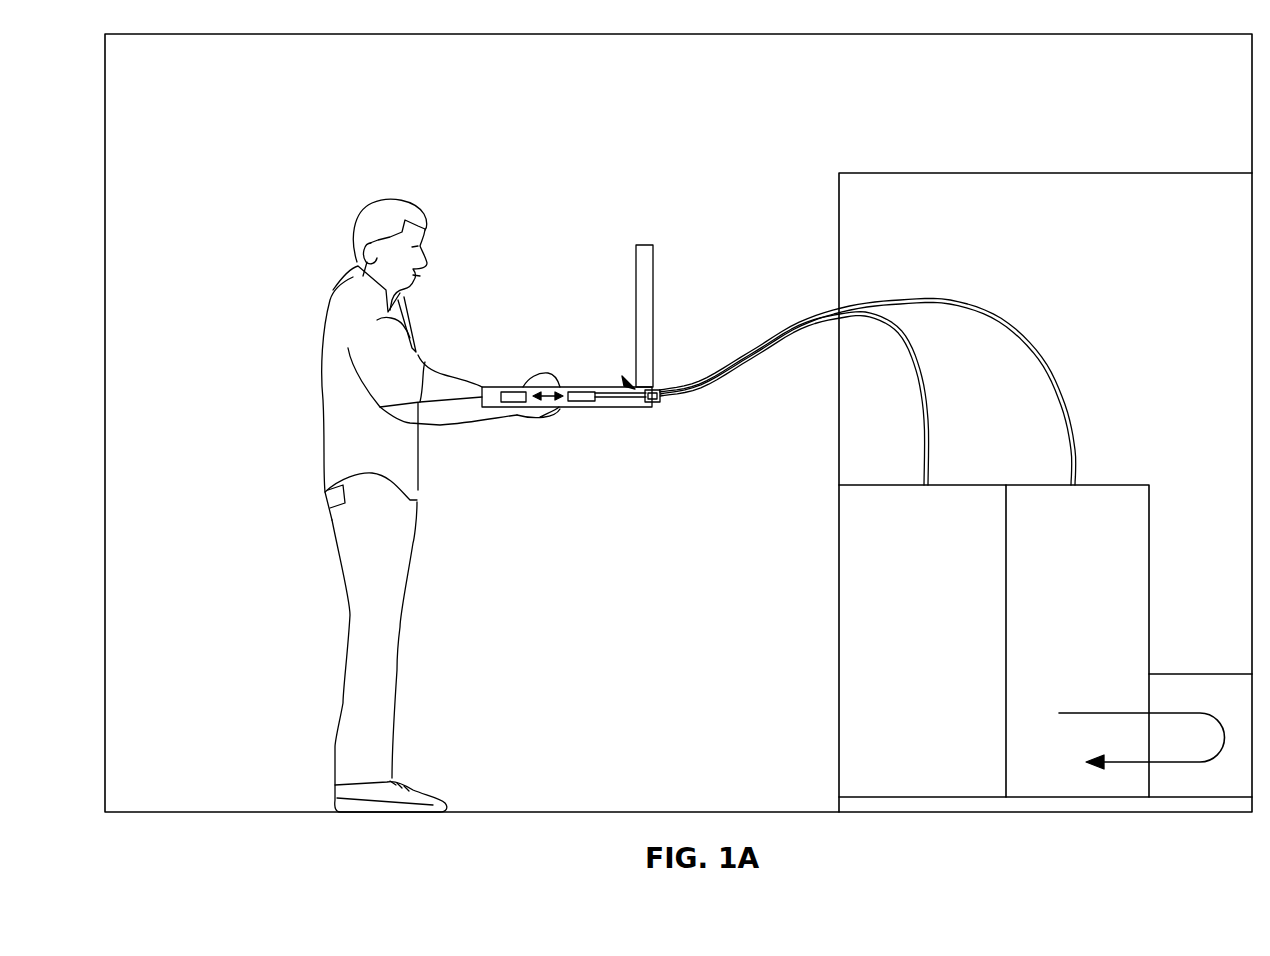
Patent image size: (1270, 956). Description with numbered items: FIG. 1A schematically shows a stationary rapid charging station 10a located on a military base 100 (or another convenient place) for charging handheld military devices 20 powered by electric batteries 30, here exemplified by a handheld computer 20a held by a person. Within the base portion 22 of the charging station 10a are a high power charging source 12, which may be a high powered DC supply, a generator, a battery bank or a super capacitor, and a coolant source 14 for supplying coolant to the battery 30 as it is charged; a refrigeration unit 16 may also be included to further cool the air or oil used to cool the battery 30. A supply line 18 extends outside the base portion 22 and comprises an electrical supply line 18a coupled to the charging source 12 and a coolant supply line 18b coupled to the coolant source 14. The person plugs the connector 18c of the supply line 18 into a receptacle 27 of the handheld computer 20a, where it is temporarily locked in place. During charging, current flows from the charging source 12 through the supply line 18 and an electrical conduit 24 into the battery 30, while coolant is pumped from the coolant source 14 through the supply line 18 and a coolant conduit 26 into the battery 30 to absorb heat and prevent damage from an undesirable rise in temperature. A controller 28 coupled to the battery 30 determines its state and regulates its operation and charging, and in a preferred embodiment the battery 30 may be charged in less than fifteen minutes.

The military base 100 is at (175, 34).
The rapid charging station 10a is at (1040, 461).
The high power charging source 12 is at (938, 653).
The coolant source 14 is at (1093, 653).
The refrigeration unit 16 is at (1229, 704).
The supply line 18 is at (868, 378).
The electrical supply line 18a is at (750, 362).
The coolant supply line 18b is at (792, 332).
The connector 18c is at (658, 402).
The military device 20 is at (656, 270).
The handheld computer 20a is at (645, 252).
The base portion 22 is at (1190, 173).
The electrical conduit 24 is at (628, 402).
The coolant conduit 26 is at (607, 393).
The receptacle 27 is at (627, 381).
The controller 28 is at (515, 393).
The electric battery 30 is at (582, 402).